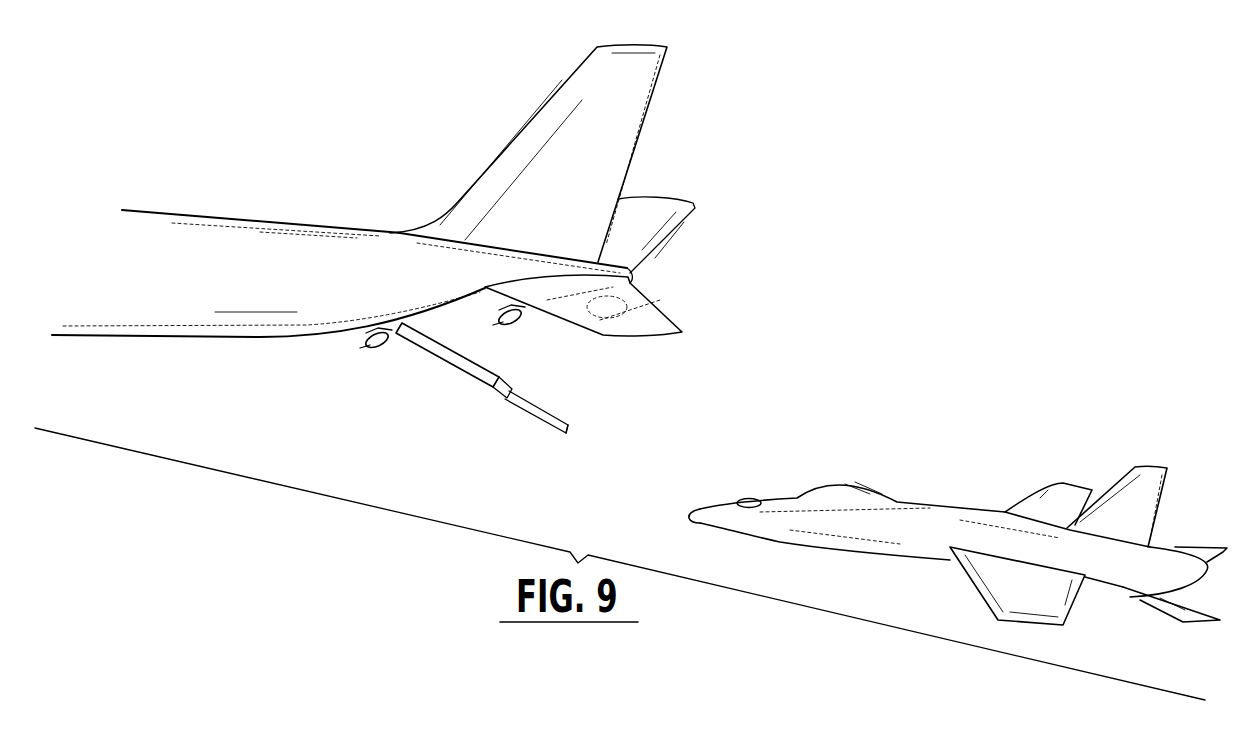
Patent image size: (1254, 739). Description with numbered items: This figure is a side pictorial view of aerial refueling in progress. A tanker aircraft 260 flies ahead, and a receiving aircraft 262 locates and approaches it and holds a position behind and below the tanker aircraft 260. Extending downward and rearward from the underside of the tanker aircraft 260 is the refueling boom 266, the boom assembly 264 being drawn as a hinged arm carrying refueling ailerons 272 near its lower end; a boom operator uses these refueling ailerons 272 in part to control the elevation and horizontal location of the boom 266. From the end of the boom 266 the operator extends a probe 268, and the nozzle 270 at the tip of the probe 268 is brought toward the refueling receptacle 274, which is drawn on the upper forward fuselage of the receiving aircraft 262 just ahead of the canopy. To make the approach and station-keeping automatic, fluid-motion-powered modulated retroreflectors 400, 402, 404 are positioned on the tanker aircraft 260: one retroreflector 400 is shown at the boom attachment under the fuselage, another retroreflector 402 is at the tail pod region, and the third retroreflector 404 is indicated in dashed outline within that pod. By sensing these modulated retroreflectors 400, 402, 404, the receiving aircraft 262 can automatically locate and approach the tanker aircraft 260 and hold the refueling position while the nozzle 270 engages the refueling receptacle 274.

The tanker aircraft 260 is at (383, 253).
The receiving aircraft 262 is at (958, 525).
The refueling boom assembly 264 is at (524, 392).
The boom 266 is at (453, 370).
The probe 268 is at (532, 415).
The nozzle 270 is at (573, 427).
The refueling ailerons 272 is at (500, 379).
The refueling receptacle 274 is at (752, 499).
The fluid-motion-powered modulated retroreflector 400 is at (360, 350).
The fluid-motion-powered modulated retroreflector 402 is at (599, 317).
The fluid-motion-powered modulated retroreflector 404 is at (640, 286).